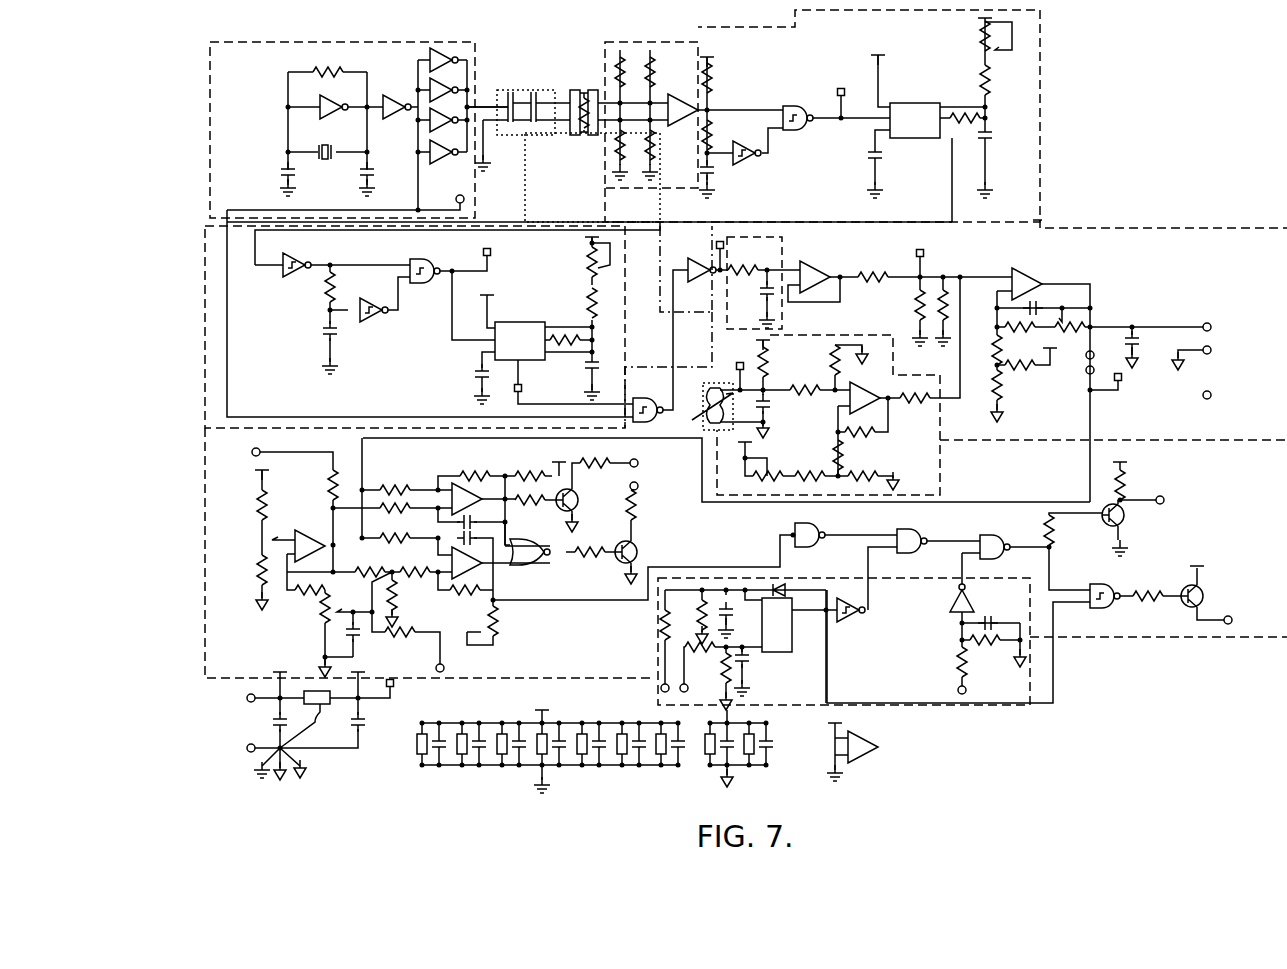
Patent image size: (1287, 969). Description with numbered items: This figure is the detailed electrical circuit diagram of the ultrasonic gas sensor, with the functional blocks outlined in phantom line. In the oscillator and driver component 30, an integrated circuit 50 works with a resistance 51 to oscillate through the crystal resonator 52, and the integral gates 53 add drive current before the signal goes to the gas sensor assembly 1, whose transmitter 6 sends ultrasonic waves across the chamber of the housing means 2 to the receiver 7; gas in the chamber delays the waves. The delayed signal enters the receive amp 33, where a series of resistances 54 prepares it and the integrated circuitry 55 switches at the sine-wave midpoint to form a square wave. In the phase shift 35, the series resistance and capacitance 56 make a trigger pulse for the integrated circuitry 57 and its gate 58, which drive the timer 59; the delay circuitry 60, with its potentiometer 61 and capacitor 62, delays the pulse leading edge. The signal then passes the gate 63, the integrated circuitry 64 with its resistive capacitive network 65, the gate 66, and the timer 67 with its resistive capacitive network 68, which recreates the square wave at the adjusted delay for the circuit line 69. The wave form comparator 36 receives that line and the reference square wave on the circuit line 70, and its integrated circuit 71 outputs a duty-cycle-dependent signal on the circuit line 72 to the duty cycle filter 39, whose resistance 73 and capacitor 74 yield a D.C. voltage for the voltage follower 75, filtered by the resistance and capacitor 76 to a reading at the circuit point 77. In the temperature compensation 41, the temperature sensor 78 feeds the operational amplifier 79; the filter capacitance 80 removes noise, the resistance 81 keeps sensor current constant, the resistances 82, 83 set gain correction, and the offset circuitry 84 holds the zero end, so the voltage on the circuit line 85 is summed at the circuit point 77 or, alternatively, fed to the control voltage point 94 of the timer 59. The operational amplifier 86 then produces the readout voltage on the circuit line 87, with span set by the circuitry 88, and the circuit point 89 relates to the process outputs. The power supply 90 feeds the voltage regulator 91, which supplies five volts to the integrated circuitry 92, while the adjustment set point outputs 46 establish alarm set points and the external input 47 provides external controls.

The gas sensor assembly 1 is at (542, 79).
The housing means 2 is at (575, 140).
The transmitter 6 is at (516, 136).
The receiver 7 is at (570, 130).
The oscillator and driver component 30 is at (356, 42).
The receive amp 33 is at (660, 42).
The phase shift 35 is at (716, 34).
The wave form comparator 36 is at (662, 365).
The duty cycle filter 39 is at (740, 237).
The temperature compensation 41 is at (940, 462).
The adjustment set point outputs 46 is at (430, 553).
The external input 47 is at (935, 710).
The integrated circuit 50 is at (327, 102).
The resistance 51 is at (330, 72).
The crystal resonator 52 is at (328, 144).
The integral gates 53 is at (428, 60).
The series of resistances 54 is at (653, 99).
The integrated circuitry 55 is at (665, 127).
The series resistance and capacitance 56 is at (715, 104).
The integrated circuitry 57 is at (802, 130).
The gate 58 is at (752, 164).
The timer 59 is at (916, 103).
The delay circuitry 60 is at (975, 39).
The potentiometer 61 is at (1012, 35).
The capacitor 62 is at (995, 135).
The gate 63 is at (290, 280).
The integrated circuitry 64 is at (420, 266).
The resistive capacitive network 65 is at (340, 329).
The gate 66 is at (384, 300).
The timer 67 is at (498, 322).
The resistive capacitive network 68 is at (598, 310).
The circuit line 69 is at (520, 404).
The circuit line 70 is at (308, 210).
The integrated circuit 71 is at (654, 397).
The circuit line 72 is at (674, 322).
The resistance 73 is at (763, 285).
The capacitor 74 is at (762, 300).
The voltage follower 75 is at (800, 302).
The resistance and capacitor 76 is at (932, 273).
The circuit point 77 is at (963, 275).
The temperature sensor 78 is at (703, 430).
The operational amplifier 79 is at (869, 421).
The filter capacitance 80 is at (772, 408).
The resistance 81 is at (770, 372).
The resistance 82 is at (833, 365).
The resistance 83 is at (862, 438).
The offset circuitry 84 is at (803, 455).
The circuit line 85 is at (960, 377).
The operational amplifier 86 is at (1028, 273).
The circuit line 87 is at (1143, 324).
The circuitry 88 is at (1050, 367).
The circuit point 89 is at (1205, 324).
The power supply 90 is at (222, 745).
The voltage regulator 91 is at (320, 717).
The integrated circuitry 92 is at (497, 721).
The control voltage point 94 is at (890, 140).